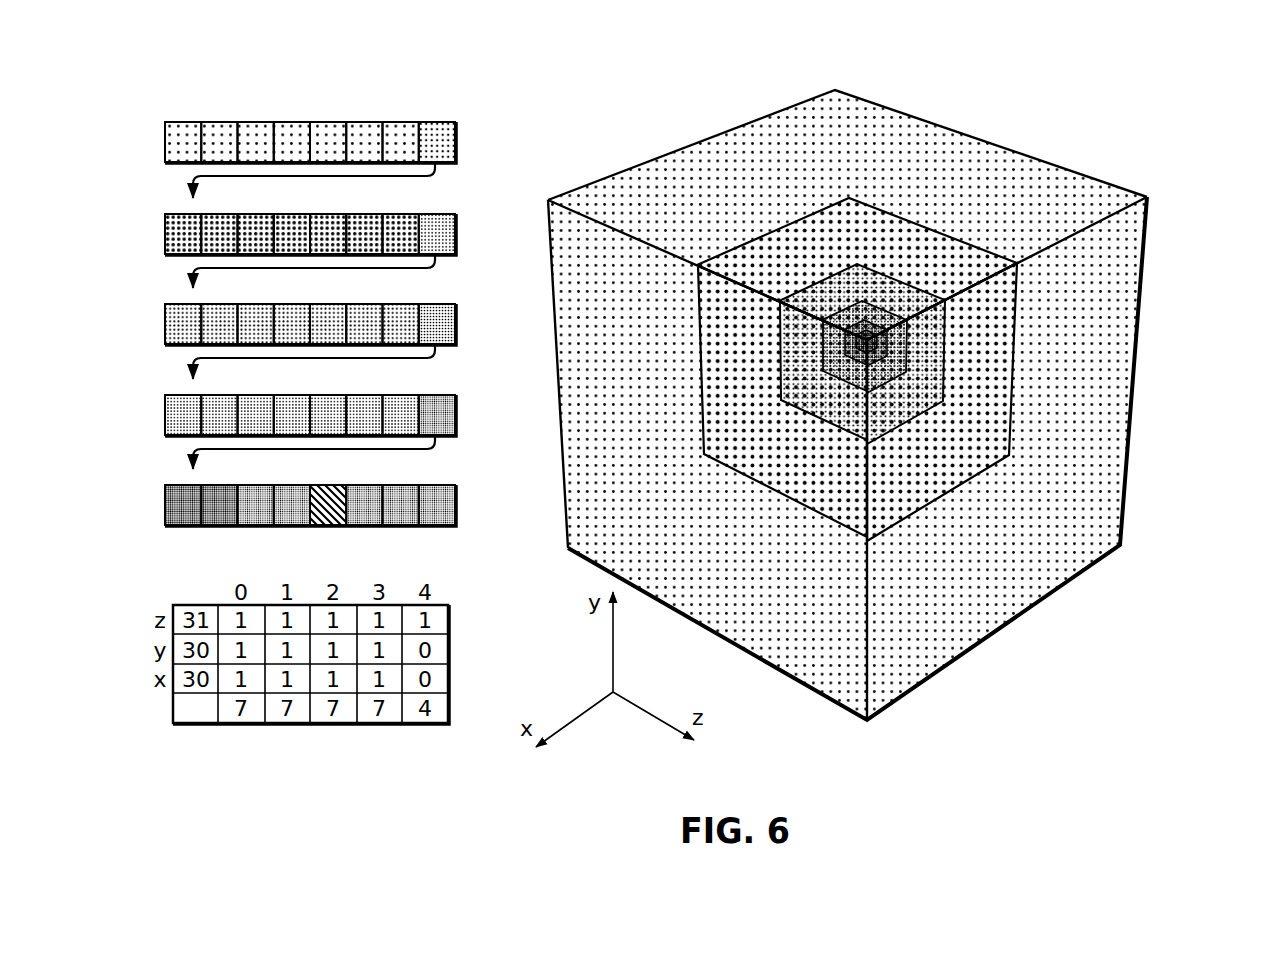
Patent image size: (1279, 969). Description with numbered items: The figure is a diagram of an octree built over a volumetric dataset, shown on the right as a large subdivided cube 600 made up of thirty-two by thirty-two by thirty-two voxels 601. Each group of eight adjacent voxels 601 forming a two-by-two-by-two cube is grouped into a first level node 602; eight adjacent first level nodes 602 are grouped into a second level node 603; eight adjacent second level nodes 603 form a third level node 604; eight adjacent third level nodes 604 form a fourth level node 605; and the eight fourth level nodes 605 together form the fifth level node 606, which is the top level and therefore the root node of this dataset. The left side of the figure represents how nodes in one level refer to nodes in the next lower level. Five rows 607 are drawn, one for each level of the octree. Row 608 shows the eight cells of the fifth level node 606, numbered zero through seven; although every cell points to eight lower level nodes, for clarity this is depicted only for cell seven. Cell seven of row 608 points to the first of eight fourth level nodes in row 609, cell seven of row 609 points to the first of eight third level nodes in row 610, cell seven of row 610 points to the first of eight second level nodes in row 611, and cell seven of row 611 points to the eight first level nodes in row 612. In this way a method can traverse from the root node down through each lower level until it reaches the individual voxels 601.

The octree spatial volume 600 is at (596, 133).
The voxels 601 is at (868, 322).
The first level node 602 is at (946, 292).
The second level node 603 is at (907, 345).
The third level node 604 is at (893, 364).
The fourth level node 605 is at (1017, 405).
The fifth level node 606 is at (1133, 423).
The rows 607 is at (316, 80).
The row 608 is at (160, 136).
The row of fourth level nodes 609 is at (160, 229).
The row of third level nodes 610 is at (160, 319).
The row of second level nodes 611 is at (160, 410).
The row of first level nodes 612 is at (160, 499).